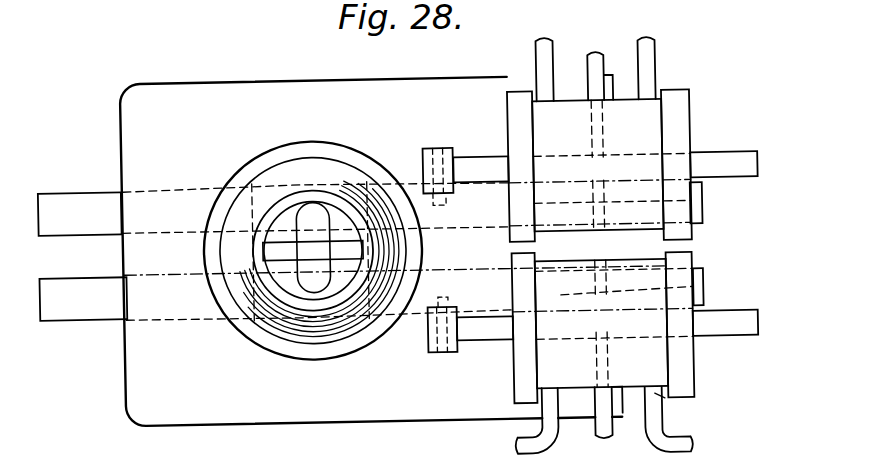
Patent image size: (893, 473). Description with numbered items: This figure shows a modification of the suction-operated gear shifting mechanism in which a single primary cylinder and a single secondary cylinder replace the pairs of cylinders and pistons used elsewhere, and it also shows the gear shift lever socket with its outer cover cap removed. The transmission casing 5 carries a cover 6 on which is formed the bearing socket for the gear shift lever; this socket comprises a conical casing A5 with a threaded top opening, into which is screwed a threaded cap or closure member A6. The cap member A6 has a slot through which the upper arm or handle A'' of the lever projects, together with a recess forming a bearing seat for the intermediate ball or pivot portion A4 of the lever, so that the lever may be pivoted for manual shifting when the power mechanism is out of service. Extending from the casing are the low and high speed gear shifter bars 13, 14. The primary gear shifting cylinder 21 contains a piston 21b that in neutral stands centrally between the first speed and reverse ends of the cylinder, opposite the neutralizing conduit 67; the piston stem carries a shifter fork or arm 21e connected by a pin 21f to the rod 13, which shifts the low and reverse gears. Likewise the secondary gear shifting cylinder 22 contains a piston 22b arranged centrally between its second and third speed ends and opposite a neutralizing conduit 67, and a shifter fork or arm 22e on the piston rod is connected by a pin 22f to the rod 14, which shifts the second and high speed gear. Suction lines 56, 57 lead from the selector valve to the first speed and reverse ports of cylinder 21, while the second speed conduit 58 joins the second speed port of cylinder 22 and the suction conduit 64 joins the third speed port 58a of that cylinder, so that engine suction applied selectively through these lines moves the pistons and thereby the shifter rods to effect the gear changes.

The transmission casing 5 is at (271, 78).
The cover 6 is at (312, 229).
The low speed gear shifter bar 13 is at (81, 190).
The high speed gear shifter bar 14 is at (69, 306).
The primary gear shifting cylinder 21 is at (650, 126).
The piston 21b is at (704, 200).
The shifter fork or arm 21e is at (457, 150).
The pin 21f is at (448, 202).
The secondary gear shifting cylinder 22 is at (648, 361).
The piston 22b is at (704, 287).
The shifter fork or arm 22e is at (453, 353).
The pin 22f is at (444, 297).
The suction line 56 is at (660, 48).
The suction line 57 is at (542, 56).
The second speed conduit 58 is at (544, 385).
The third speed port 58a is at (659, 402).
The suction conduit 64 is at (688, 450).
The neutralizing conduit 67 is at (611, 58).
The ball or pivot portion A4 is at (310, 282).
The conical casing A5 is at (248, 264).
The threaded cap or closure member A6 is at (273, 200).
The upper arm or handle A'' is at (310, 224).